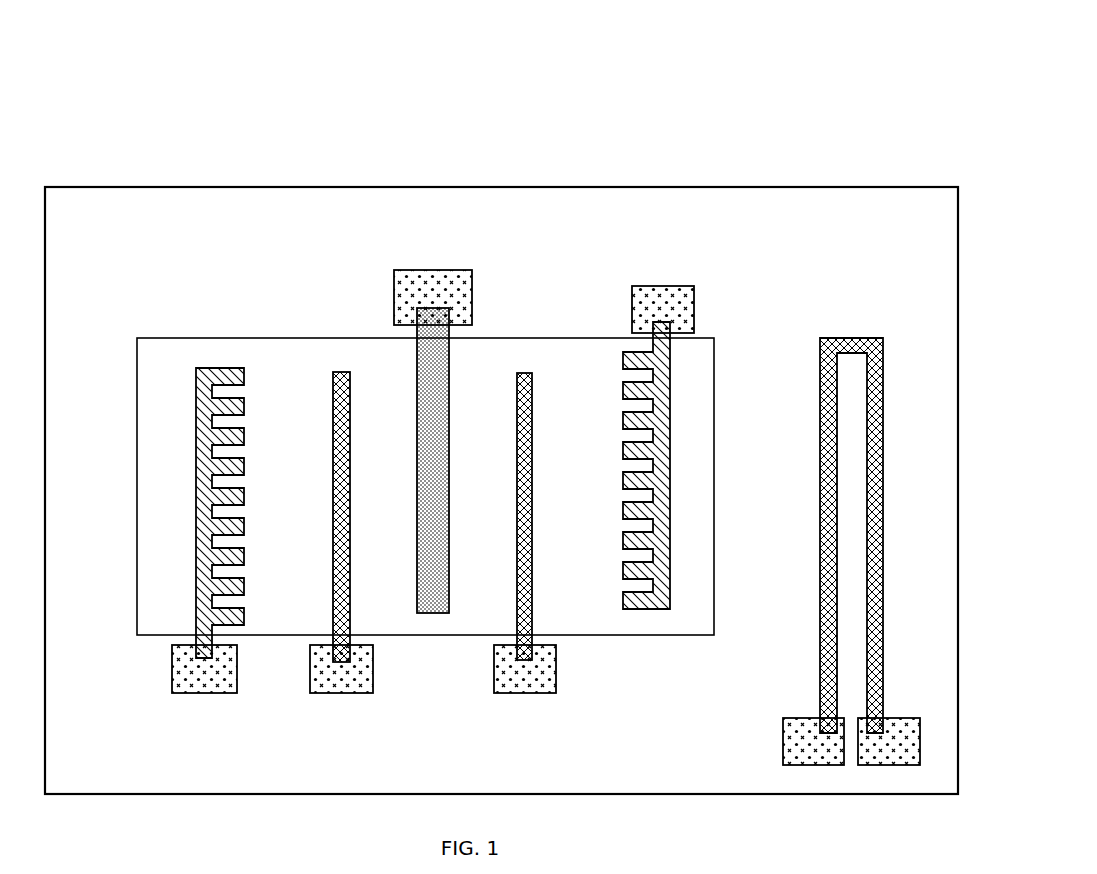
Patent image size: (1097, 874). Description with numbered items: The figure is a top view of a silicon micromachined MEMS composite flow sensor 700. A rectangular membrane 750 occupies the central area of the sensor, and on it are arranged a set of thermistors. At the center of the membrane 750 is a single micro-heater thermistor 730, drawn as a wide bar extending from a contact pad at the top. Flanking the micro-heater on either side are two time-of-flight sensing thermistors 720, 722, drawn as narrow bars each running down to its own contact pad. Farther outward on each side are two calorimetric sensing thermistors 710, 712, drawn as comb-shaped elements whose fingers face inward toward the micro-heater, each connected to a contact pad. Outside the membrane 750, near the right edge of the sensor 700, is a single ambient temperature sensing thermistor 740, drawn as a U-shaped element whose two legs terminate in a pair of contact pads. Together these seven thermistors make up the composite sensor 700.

The MEMS composite flow sensor 700 is at (745, 273).
The membrane 750 is at (289, 377).
The calorimetric sensing thermistor 710 is at (212, 368).
The calorimetric sensing thermistor 712 is at (663, 320).
The time-of-flight sensing thermistor 720 is at (341, 373).
The time-of-flight sensing thermistor 722 is at (525, 372).
The micro-heater thermistor 730 is at (430, 367).
The ambient temperature sensing thermistor 740 is at (835, 335).